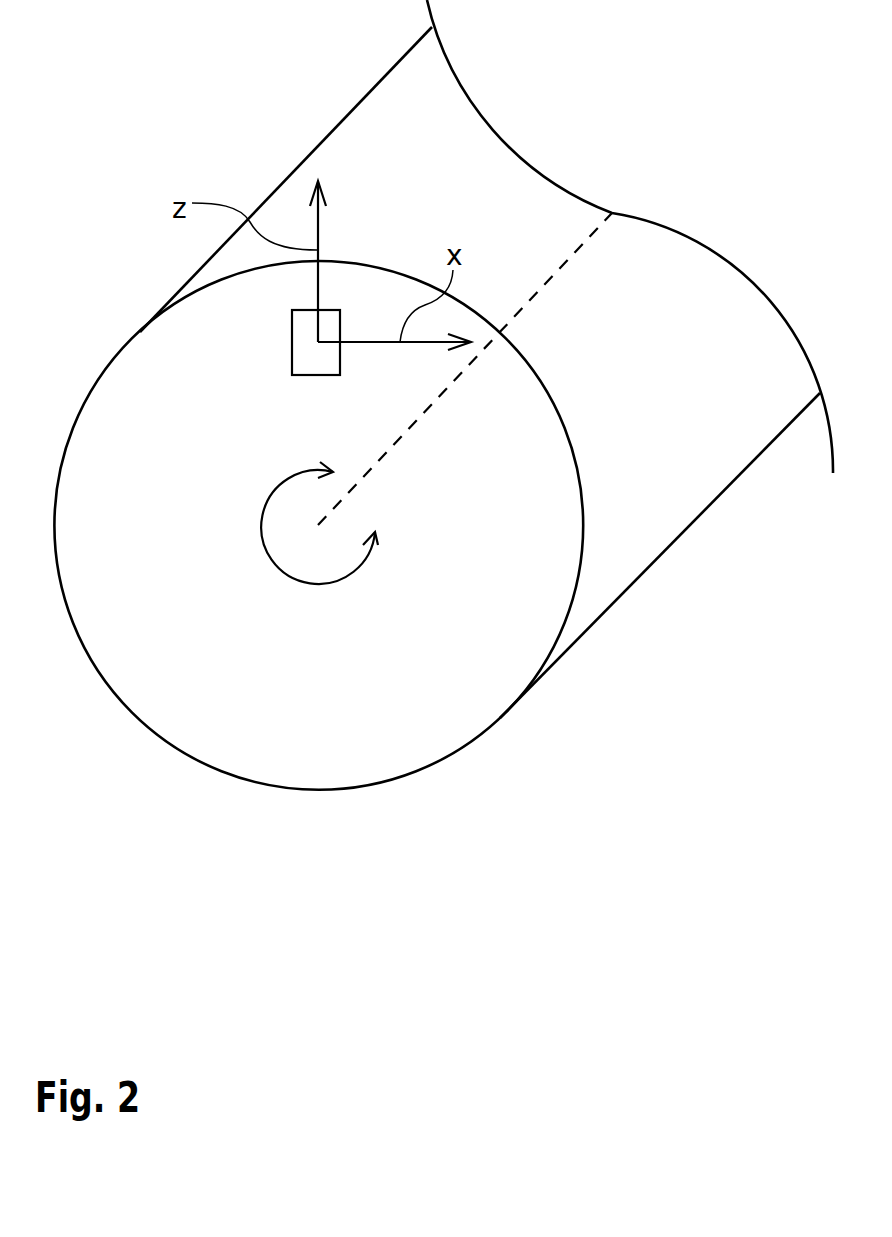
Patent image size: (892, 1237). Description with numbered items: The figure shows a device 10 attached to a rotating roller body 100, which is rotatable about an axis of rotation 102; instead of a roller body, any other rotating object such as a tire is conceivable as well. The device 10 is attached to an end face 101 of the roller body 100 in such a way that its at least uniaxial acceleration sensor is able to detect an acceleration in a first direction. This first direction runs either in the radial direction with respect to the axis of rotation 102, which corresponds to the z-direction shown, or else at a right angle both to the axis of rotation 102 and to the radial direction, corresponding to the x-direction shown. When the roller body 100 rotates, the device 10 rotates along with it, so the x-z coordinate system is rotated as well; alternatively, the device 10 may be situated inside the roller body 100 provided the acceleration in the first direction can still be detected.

The roller body 100 is at (648, 570).
The end face 101 is at (173, 685).
The axis of rotation 102 is at (558, 270).
The device 10 is at (303, 375).